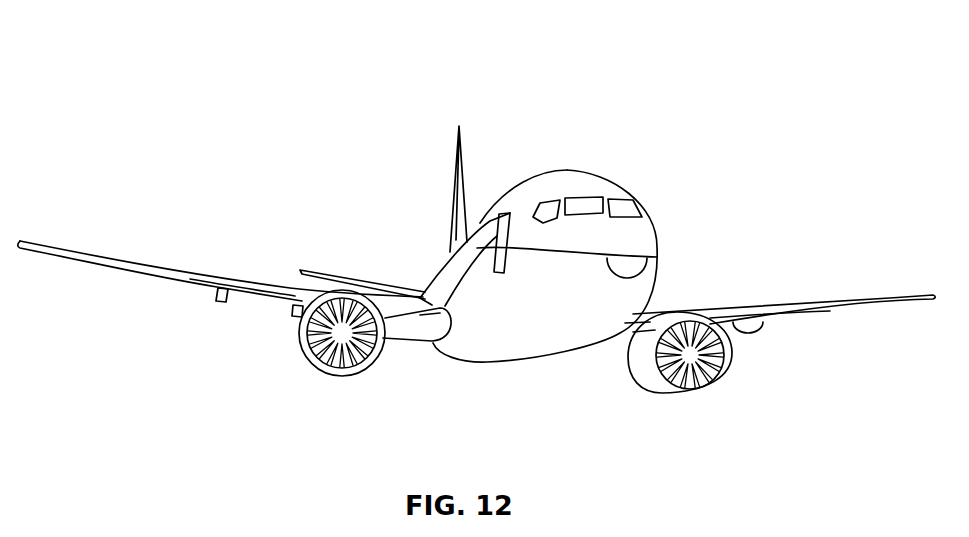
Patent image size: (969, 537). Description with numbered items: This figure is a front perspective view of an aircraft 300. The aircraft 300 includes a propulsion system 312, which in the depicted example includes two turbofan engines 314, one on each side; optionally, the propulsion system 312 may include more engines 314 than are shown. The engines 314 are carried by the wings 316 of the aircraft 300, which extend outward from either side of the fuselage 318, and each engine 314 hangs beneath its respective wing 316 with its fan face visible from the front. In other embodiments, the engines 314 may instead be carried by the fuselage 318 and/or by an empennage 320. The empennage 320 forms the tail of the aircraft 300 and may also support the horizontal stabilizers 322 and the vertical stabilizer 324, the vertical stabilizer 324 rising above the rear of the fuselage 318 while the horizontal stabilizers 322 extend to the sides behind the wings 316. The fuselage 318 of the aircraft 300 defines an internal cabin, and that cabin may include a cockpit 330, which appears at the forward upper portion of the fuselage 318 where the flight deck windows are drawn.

The aircraft 300 is at (251, 83).
The propulsion system 312 is at (766, 385).
The turbofan engines 314 is at (340, 377).
The wings 316 is at (143, 265).
The fuselage 318 is at (653, 230).
The empennage 320 is at (448, 253).
The horizontal stabilizers 322 is at (333, 274).
The vertical stabilizer 324 is at (456, 160).
The cockpit 330 is at (584, 198).